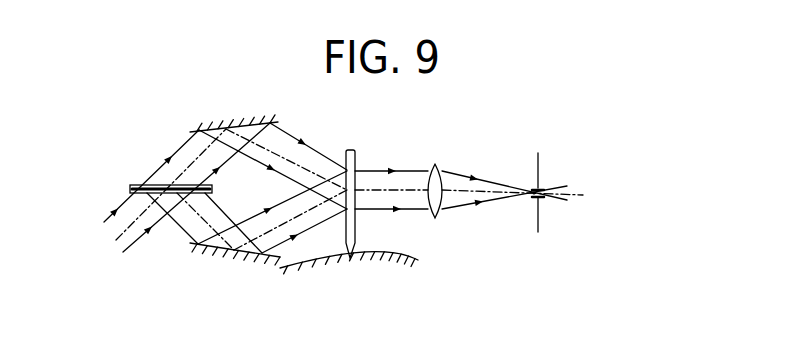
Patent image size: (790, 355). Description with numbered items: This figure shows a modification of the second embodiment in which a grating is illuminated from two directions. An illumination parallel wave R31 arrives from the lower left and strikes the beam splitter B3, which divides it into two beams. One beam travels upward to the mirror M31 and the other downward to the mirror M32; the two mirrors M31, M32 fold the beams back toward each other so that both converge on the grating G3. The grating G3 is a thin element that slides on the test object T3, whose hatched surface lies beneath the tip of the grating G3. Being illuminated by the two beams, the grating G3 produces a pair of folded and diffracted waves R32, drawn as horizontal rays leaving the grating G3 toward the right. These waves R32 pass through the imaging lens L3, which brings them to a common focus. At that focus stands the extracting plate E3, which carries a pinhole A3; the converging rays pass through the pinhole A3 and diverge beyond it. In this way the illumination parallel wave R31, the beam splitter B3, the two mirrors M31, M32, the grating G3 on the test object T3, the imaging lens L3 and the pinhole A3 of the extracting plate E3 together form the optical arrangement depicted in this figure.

The beam splitter B3 is at (138, 185).
The mirror M31 is at (250, 121).
The mirror M32 is at (233, 253).
The grating G3 is at (352, 150).
The imaging lens L3 is at (435, 165).
The pinhole A3 is at (543, 190).
The extracting plate E3 is at (532, 225).
The illumination parallel wave R31 is at (135, 242).
The pair of folded and diffracted waves R32 is at (417, 210).
The test object T3 is at (370, 258).